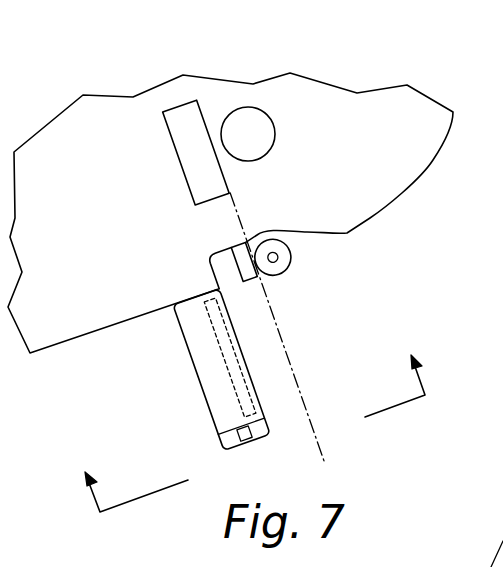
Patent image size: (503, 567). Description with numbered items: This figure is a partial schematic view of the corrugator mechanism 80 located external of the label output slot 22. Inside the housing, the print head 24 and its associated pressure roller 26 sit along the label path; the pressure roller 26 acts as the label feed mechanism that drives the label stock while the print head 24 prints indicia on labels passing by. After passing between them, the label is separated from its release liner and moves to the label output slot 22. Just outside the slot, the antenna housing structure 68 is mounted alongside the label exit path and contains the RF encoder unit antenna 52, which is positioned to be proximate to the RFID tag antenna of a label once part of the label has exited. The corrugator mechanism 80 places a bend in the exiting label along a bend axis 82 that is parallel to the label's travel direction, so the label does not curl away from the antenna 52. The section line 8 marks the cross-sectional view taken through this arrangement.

The section line 8- 8 is at (249, 416).
The label output slot 22 is at (244, 242).
The print head 24 is at (192, 158).
The pressure roller 26 is at (257, 130).
The antenna 52 is at (227, 348).
The antenna housing structure 68 is at (212, 407).
The corrugator mechanism 80 is at (315, 263).
The bend axis 82 is at (295, 372).